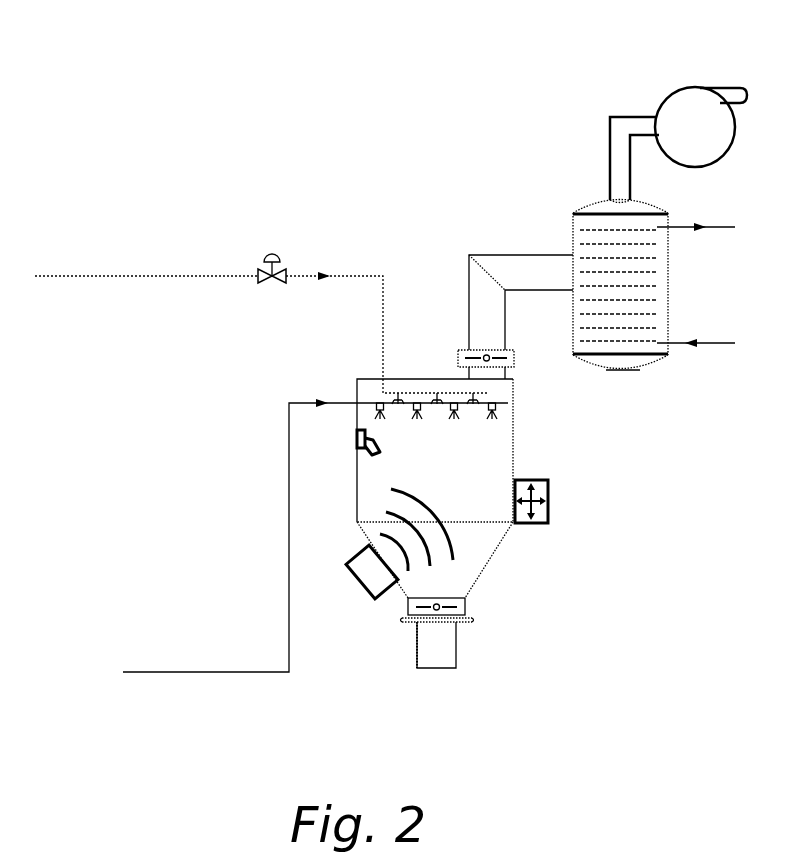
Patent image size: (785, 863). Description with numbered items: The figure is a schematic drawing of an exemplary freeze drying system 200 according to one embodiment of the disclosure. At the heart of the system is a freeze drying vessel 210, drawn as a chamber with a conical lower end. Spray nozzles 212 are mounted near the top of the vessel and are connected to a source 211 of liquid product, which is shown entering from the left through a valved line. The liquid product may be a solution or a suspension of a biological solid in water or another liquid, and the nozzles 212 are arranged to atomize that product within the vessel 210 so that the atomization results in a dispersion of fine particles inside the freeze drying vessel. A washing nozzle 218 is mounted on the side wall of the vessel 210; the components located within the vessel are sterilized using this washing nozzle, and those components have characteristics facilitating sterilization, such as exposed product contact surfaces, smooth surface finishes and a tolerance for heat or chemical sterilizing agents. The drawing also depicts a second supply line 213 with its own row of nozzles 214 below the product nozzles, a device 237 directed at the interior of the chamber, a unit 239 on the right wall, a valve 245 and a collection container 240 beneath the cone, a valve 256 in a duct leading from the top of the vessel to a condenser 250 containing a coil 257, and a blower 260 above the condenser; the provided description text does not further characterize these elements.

The system 200 is at (243, 104).
The freeze drying vessel 210 is at (517, 432).
The source of liquid product 211 is at (303, 274).
The spray nozzles 212 is at (397, 390).
The sterile liquid nitrogen line 213 is at (289, 523).
The liquid nitrogen spray nozzles 214 is at (380, 402).
The washing nozzle 218 is at (357, 441).
The ultrasonic transducer 237 is at (358, 583).
The vibrator 239 is at (535, 525).
The product collection vessel 240 is at (456, 643).
The discharge valve 245 is at (467, 606).
The condenser 250 is at (591, 203).
The vent valve 256 is at (515, 358).
The condenser coil 257 is at (590, 245).
The blower 260 is at (688, 87).